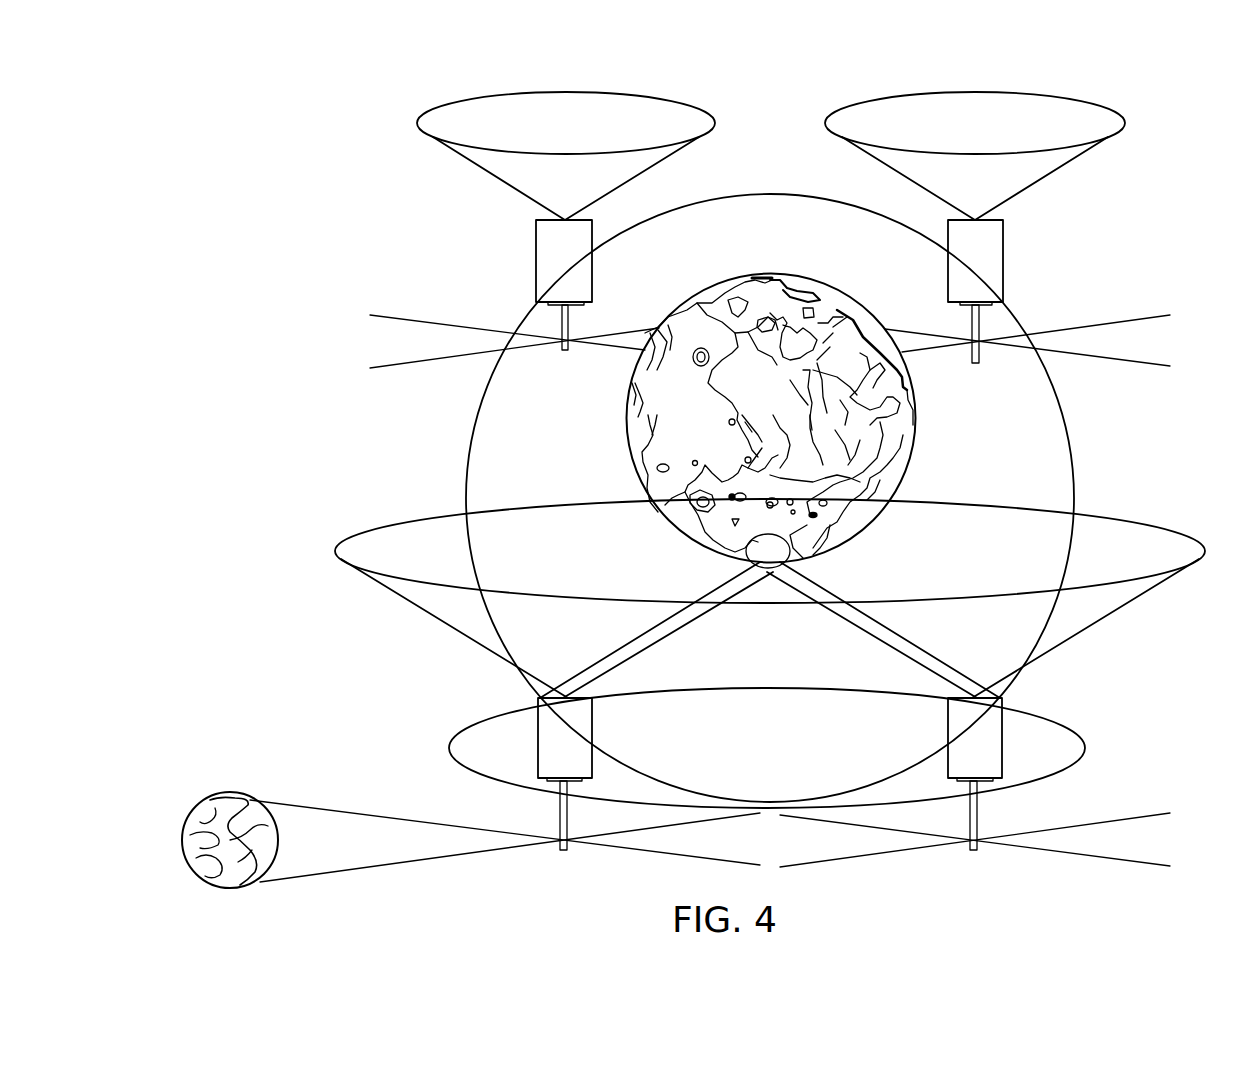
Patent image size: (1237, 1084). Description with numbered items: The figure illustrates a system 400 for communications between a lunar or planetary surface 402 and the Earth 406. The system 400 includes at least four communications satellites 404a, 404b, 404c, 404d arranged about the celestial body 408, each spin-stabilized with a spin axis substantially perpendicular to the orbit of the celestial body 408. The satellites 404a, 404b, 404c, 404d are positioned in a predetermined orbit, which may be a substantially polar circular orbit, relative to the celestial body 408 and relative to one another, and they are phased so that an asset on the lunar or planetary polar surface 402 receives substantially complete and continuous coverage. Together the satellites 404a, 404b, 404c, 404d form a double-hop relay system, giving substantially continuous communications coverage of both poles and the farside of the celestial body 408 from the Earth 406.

The system 400 is at (778, 499).
The lunar or planetary surface 402 is at (913, 437).
The communications satellite 404a is at (538, 755).
The communications satellite 404b is at (536, 250).
The communications satellite 404c is at (1003, 250).
The communications satellite 404d is at (1003, 737).
The Earth 406 is at (218, 793).
The celestial body 408 is at (770, 474).